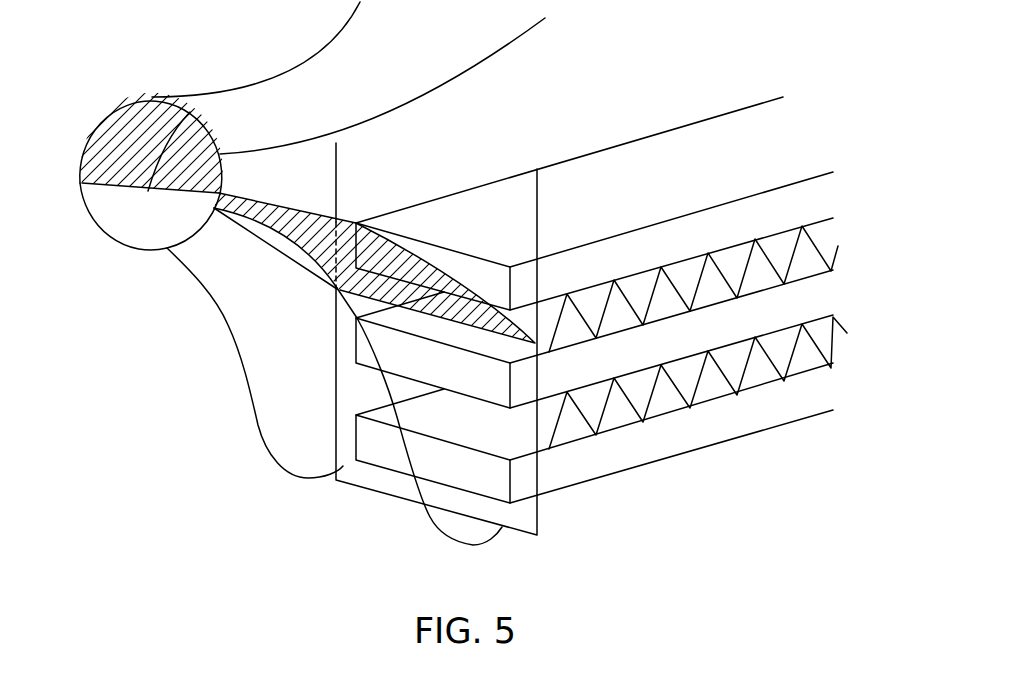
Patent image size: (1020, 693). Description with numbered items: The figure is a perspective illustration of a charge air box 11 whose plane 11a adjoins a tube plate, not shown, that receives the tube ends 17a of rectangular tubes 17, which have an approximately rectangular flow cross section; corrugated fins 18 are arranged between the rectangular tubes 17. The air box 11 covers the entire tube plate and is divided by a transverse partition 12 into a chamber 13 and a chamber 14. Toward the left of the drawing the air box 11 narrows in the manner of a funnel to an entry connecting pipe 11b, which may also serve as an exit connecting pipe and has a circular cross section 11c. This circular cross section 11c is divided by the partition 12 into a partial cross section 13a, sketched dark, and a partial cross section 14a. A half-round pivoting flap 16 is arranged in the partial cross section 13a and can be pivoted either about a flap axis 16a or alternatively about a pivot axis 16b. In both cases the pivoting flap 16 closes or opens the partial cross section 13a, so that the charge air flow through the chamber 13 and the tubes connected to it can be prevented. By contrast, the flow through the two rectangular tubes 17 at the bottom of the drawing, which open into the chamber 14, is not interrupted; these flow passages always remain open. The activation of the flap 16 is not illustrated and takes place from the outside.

The charge air box 11 is at (238, 370).
The plane 11a is at (540, 513).
The entry connecting pipe 11b is at (217, 303).
The circular cross section 11c is at (84, 207).
The transverse partition 12 is at (405, 267).
The chamber 13 is at (360, 185).
The partial cross section 13a is at (108, 113).
The chamber 14 is at (283, 370).
The partial cross section 14a is at (123, 228).
The half-round pivoting flap 16 is at (83, 157).
The flap axis 16a is at (177, 128).
The pivot axis 16b is at (152, 103).
The rectangular tubes 17 is at (818, 201).
The tube ends 17a is at (471, 256).
The corrugated fins 18 is at (697, 300).